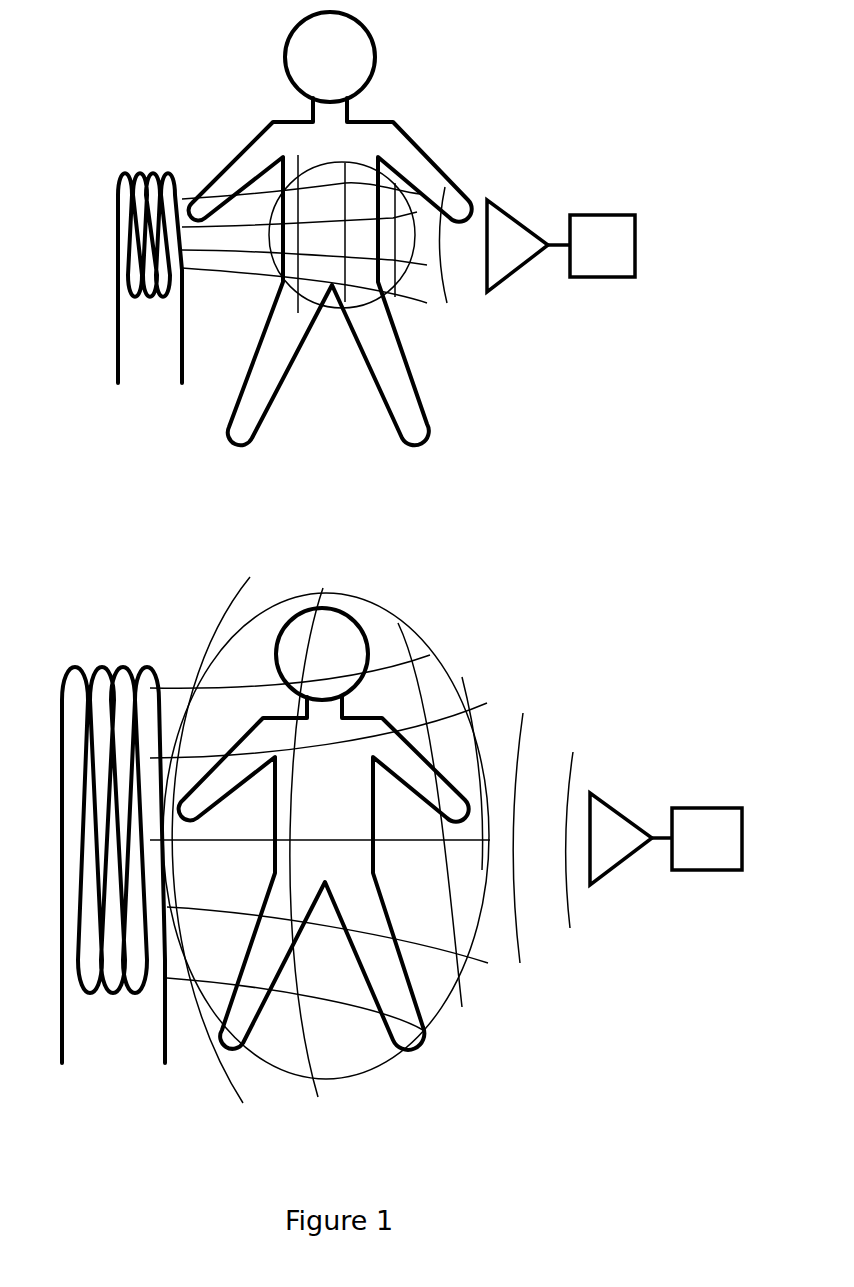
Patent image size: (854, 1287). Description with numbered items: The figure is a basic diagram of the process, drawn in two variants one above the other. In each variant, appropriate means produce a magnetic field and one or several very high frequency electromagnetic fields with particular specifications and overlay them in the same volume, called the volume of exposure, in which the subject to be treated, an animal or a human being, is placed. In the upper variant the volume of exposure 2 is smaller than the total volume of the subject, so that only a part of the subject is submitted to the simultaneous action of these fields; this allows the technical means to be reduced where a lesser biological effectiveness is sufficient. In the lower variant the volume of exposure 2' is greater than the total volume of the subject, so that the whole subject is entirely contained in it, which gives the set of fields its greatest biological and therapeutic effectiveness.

The volume of exposure 2 is at (353, 182).
The volume of exposure 2' is at (373, 833).